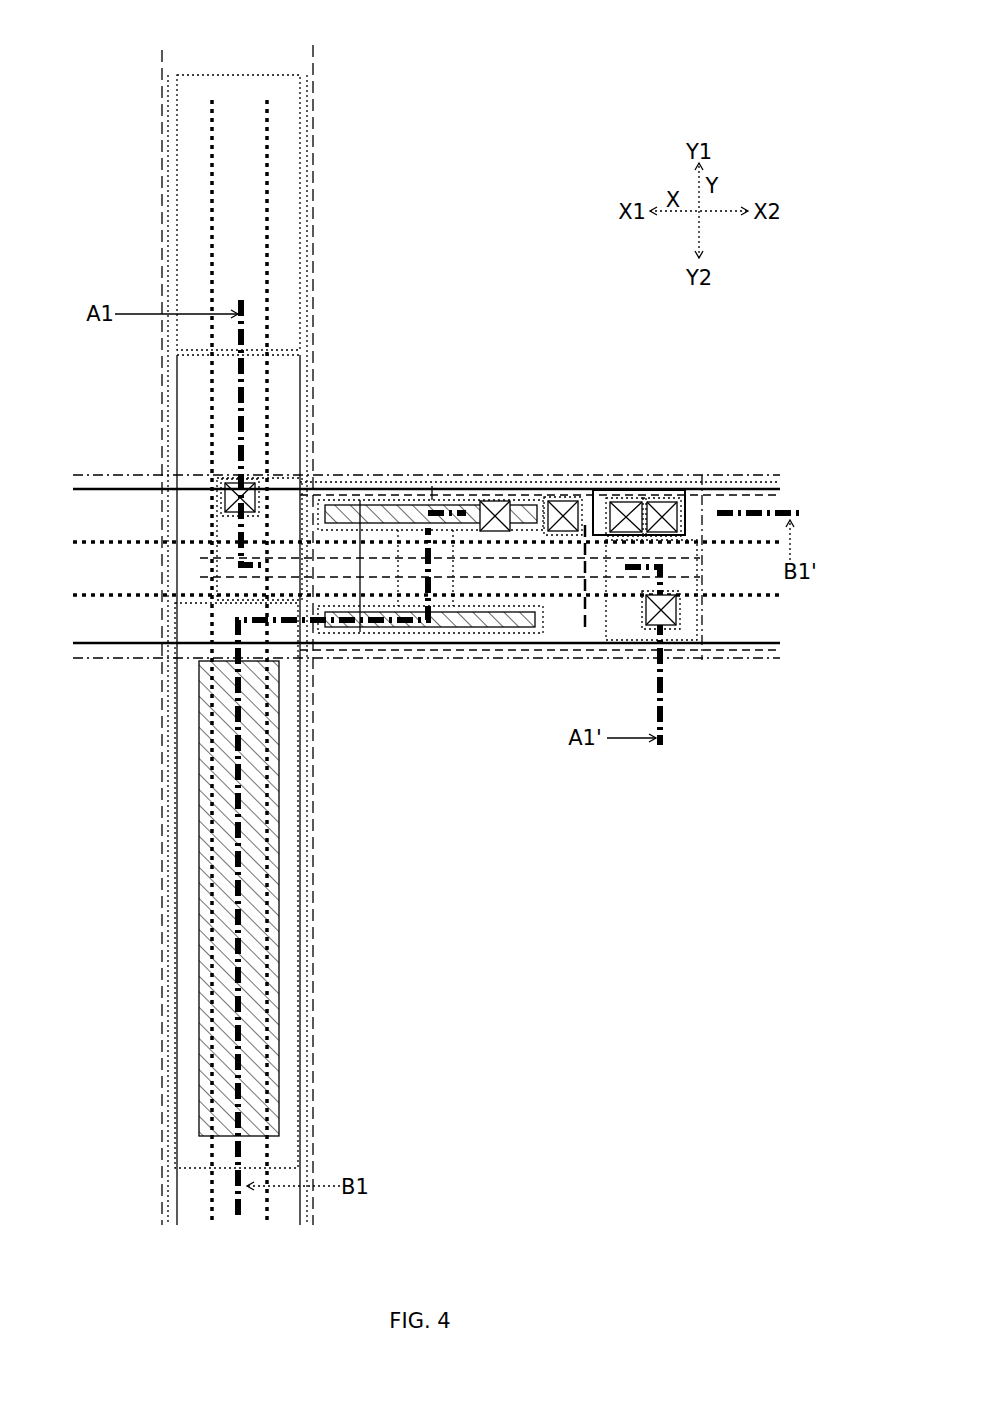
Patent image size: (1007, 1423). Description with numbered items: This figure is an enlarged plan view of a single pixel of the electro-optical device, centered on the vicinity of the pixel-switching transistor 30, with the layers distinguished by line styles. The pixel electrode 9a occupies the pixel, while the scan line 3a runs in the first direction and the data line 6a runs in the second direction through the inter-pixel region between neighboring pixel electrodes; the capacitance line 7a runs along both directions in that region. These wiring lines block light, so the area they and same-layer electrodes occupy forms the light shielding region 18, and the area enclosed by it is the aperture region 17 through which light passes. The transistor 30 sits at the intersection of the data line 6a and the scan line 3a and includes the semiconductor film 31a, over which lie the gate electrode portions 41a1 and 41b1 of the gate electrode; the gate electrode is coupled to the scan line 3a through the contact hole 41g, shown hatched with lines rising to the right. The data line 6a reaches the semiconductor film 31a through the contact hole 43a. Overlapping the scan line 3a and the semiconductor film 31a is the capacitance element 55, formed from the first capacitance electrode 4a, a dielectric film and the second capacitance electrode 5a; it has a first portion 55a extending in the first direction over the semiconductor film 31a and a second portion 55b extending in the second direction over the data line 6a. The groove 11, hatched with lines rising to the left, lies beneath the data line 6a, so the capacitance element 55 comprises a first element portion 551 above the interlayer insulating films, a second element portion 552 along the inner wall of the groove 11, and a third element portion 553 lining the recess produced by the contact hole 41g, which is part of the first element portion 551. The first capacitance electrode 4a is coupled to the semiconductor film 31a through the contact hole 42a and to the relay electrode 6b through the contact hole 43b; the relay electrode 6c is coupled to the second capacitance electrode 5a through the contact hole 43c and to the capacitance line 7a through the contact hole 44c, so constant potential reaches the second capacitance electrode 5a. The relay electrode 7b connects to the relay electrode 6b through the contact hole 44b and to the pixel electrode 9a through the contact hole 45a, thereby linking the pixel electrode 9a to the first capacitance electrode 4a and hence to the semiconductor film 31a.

The data line 6a is at (163, 46).
The capacitance line 7a is at (300, 76).
The pixel electrode 9a is at (208, 222).
The light shielding region 18 is at (352, 252).
The aperture region 17 is at (522, 269).
The scan line 3a is at (64, 489).
The contact hole 43a is at (246, 488).
The contact hole 41g is at (372, 500).
The relay electrode 6c is at (390, 500).
The gate electrode portion 41b1 is at (426, 505).
The contact hole 44c is at (507, 500).
The contact hole 43c is at (562, 502).
The contact hole 43b is at (660, 500).
The contact hole 45a is at (662, 517).
The contact hole 44b is at (626, 500).
The relay electrode 6b is at (681, 490).
The relay electrode 7b is at (718, 488).
The contact hole 42a is at (666, 612).
The semiconductor film 31a is at (555, 578).
The gate electrode portion 41a1 is at (522, 640).
The transistor 30 is at (438, 640).
The first portion 55a is at (386, 658).
The third element portion 553 is at (473, 643).
The first element portion 551 is at (348, 650).
The second element portion 552 is at (265, 770).
The capacitance element 55 is at (423, 762).
The second portion 55b is at (312, 826).
The groove 11 is at (283, 846).
The first capacitance electrode 4a is at (310, 952).
The second capacitance electrode 5a is at (300, 972).